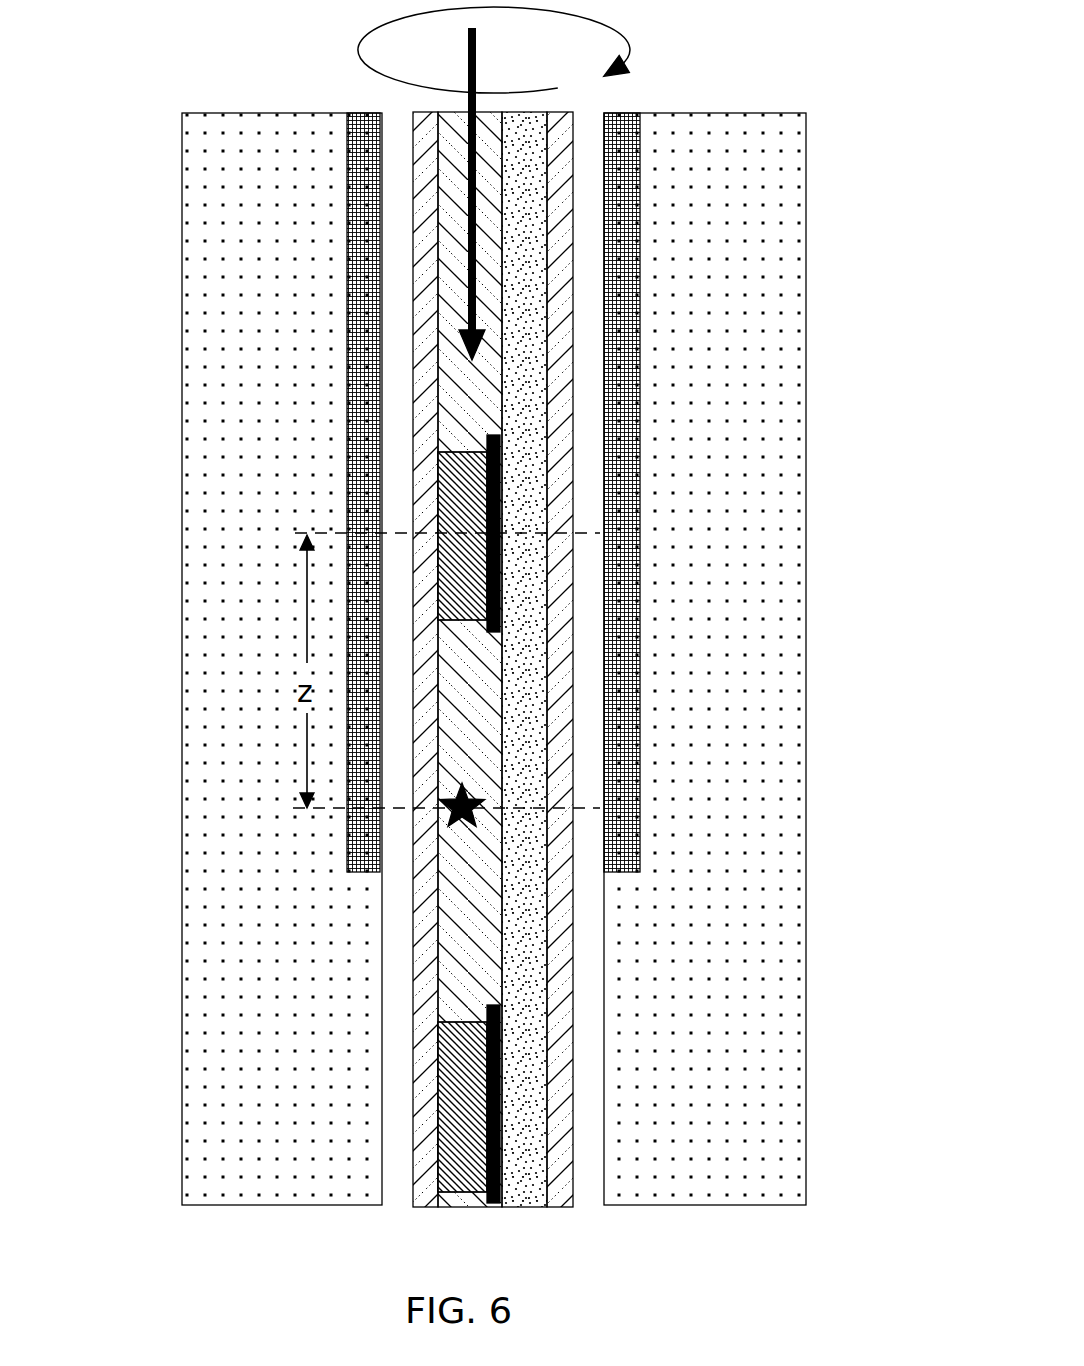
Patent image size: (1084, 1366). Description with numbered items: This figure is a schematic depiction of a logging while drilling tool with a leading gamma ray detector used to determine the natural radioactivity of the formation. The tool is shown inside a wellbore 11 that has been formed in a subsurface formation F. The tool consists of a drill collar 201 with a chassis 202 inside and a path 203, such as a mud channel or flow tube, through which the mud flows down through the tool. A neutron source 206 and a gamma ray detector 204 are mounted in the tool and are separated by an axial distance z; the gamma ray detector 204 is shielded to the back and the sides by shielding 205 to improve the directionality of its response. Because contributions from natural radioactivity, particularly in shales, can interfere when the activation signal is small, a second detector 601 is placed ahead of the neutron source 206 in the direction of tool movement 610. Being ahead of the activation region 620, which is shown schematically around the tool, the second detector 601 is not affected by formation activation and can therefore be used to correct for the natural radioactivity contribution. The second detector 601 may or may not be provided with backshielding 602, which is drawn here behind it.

The wellbore 11 is at (588, 604).
The subsurface formation F is at (668, 218).
The drill collar 201 is at (573, 118).
The chassis 202 is at (412, 111).
The path 203 is at (530, 350).
The gamma ray detector 204 is at (438, 482).
The shielding 205 is at (510, 500).
The neutron source 206 is at (440, 815).
The second detector 601 is at (500, 1096).
The backshielding 602 is at (438, 1164).
The direction of tool movement 610 is at (460, 236).
The activation region 620 is at (365, 367).